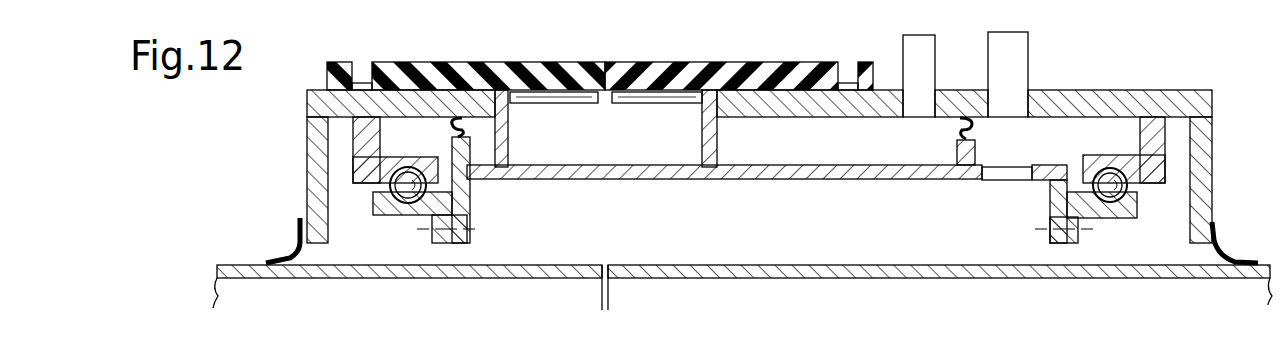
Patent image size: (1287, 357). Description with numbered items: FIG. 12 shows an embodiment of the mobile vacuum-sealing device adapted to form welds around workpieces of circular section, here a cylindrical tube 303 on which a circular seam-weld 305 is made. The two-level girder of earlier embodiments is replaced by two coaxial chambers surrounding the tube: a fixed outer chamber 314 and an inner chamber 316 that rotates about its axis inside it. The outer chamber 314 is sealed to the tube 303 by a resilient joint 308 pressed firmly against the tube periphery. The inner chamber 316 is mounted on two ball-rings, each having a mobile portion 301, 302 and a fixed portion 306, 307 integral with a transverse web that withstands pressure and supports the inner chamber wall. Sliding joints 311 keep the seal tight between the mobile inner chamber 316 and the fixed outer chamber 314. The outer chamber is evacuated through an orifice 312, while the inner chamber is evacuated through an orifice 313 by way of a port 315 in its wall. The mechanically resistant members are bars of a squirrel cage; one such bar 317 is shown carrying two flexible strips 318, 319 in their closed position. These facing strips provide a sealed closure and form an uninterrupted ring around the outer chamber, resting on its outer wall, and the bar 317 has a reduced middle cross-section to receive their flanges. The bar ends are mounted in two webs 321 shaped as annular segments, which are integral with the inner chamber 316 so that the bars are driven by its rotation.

The mobile portion of ball-ring 301 is at (391, 213).
The mobile portion of ball-ring 302 is at (1125, 213).
The cylindrical tube 303 is at (770, 264).
The circular seam-weld 305 is at (604, 262).
The fixed portion of ball-ring 306 is at (410, 165).
The fixed portion of ball-ring 307 is at (1118, 162).
The resilient joint 308 is at (292, 259).
The sliding joint 311 is at (973, 126).
The orifice 312 is at (920, 57).
The orifice 313 is at (1020, 55).
The outer chamber 314 is at (1168, 100).
The port 315 is at (1006, 177).
The inner chamber 316 is at (850, 178).
The bar 317 is at (665, 104).
The flexible strip 318 is at (450, 50).
The flexible strip 319 is at (713, 63).
The web 321 is at (717, 138).